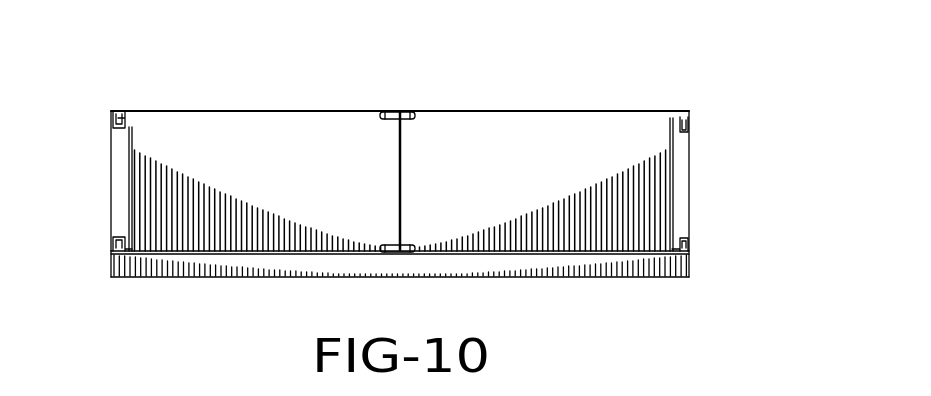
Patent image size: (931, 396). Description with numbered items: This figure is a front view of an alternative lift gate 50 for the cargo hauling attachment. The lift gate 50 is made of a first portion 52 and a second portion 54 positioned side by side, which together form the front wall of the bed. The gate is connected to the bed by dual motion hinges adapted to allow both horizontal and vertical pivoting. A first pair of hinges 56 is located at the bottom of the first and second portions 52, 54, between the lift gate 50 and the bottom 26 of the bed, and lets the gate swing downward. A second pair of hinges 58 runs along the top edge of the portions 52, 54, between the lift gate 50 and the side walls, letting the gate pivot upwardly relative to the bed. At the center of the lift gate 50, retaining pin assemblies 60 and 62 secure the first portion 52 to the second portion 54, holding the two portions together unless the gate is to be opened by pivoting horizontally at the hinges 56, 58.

The lift gate 50 is at (712, 49).
The first portion 52 is at (238, 158).
The second portion 54 is at (550, 158).
The first pair of hinges 56 is at (114, 243).
The second pair of hinges 58 is at (114, 122).
The retaining pin assembly 60 is at (392, 117).
The retaining pin assembly 62 is at (413, 250).
The bottom 26 is at (205, 268).